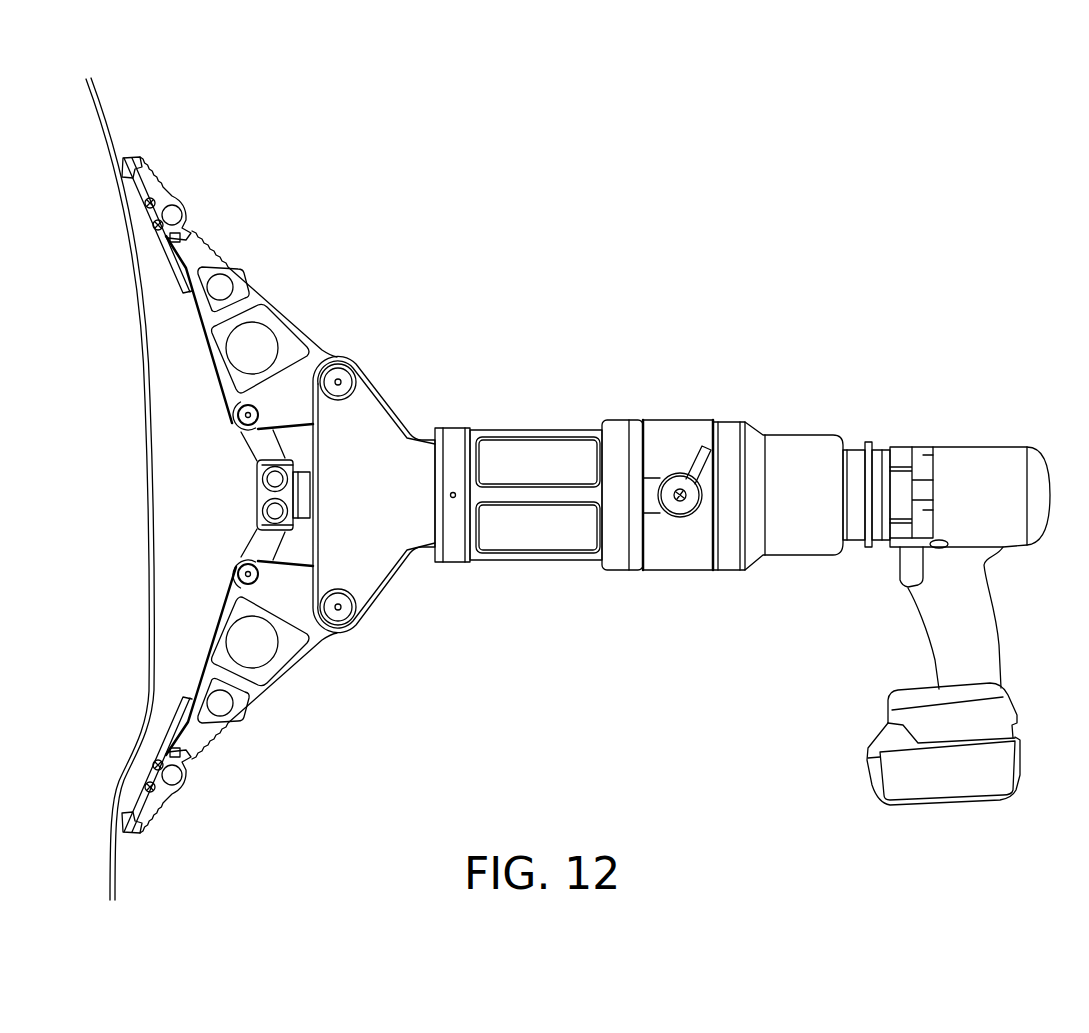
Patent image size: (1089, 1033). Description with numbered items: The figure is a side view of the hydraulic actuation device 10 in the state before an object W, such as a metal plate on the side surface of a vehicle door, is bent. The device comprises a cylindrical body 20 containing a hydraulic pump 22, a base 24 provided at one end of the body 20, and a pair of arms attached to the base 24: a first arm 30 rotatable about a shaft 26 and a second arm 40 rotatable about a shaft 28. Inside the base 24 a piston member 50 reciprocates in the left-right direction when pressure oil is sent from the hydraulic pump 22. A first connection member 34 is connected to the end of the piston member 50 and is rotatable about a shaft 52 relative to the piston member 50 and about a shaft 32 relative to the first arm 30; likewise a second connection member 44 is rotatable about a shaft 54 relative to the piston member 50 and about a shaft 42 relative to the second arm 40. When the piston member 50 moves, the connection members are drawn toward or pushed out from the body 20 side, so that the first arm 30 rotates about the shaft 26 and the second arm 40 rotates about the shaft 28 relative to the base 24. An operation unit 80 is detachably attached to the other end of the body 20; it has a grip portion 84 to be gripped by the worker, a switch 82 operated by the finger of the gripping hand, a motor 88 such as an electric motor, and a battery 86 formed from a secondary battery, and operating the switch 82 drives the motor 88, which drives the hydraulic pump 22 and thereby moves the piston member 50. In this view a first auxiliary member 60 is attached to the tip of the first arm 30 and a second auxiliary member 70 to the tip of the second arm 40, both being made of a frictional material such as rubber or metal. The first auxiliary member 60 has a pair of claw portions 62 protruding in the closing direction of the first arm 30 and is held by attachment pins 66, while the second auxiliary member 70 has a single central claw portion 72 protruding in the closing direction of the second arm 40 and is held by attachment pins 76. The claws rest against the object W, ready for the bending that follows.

The hydraulic actuation device 10 is at (540, 405).
The body 20 is at (683, 566).
The hydraulic pump 22 is at (546, 548).
The base 24 is at (384, 472).
The shaft 26 is at (340, 378).
The shaft 28 is at (350, 608).
The first arm 30 is at (193, 278).
The shaft 32 is at (240, 416).
The first connection member 34 is at (262, 452).
The second arm 40 is at (263, 713).
The shaft 42 is at (240, 575).
The second connection member 44 is at (262, 540).
The piston member 50 is at (300, 433).
The shaft 52 is at (264, 480).
The shaft 54 is at (262, 513).
The first auxiliary member 60 is at (162, 194).
The claw portions 62 is at (130, 160).
The attachment pins 66 is at (180, 215).
The second auxiliary member 70 is at (199, 797).
The claw portion 72 is at (130, 830).
The attachment pins 76 is at (182, 776).
The operation unit 80 is at (970, 627).
The switch 82 is at (893, 566).
The grip portion 84 is at (983, 637).
The battery 86 is at (958, 785).
The motor 88 is at (976, 480).
The object W is at (143, 330).